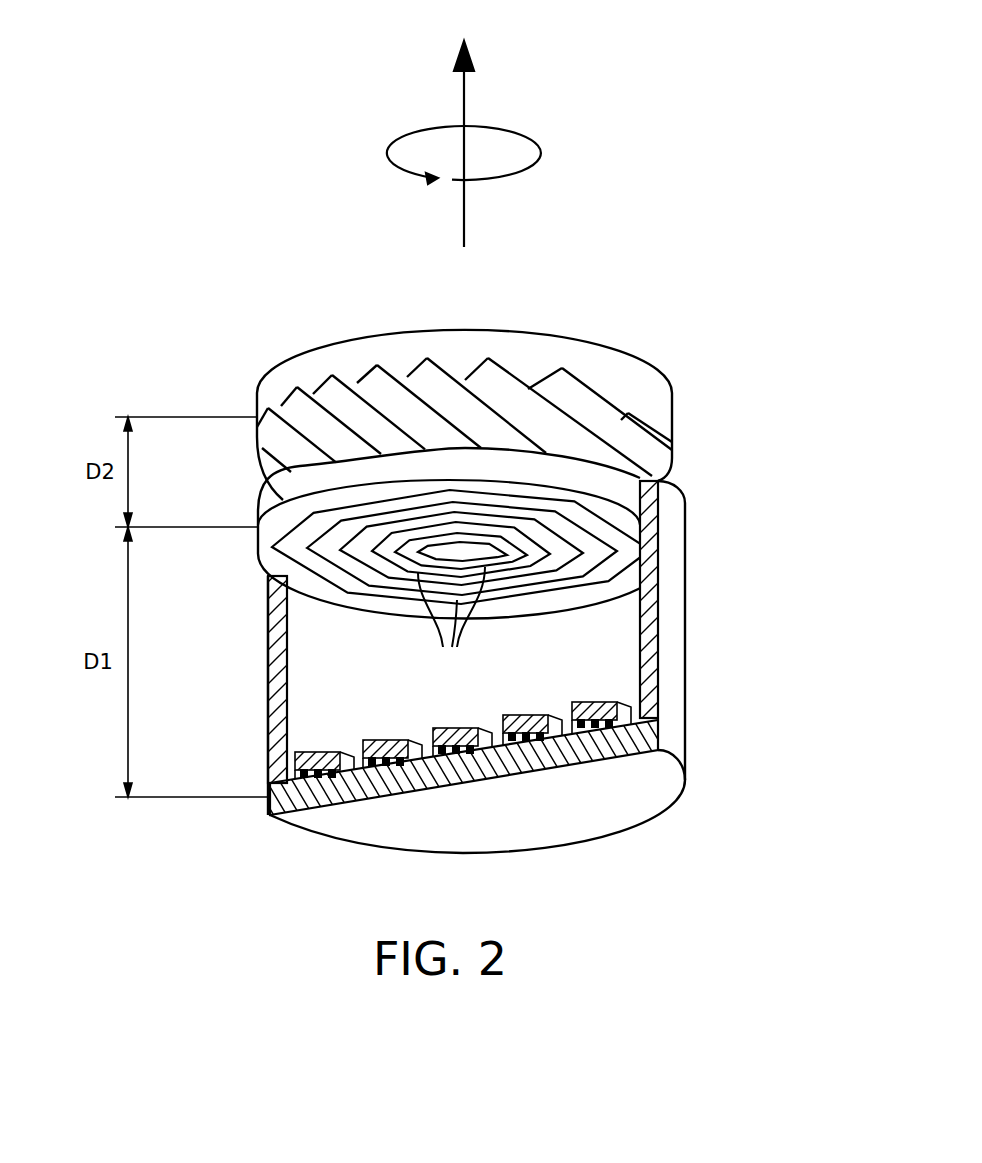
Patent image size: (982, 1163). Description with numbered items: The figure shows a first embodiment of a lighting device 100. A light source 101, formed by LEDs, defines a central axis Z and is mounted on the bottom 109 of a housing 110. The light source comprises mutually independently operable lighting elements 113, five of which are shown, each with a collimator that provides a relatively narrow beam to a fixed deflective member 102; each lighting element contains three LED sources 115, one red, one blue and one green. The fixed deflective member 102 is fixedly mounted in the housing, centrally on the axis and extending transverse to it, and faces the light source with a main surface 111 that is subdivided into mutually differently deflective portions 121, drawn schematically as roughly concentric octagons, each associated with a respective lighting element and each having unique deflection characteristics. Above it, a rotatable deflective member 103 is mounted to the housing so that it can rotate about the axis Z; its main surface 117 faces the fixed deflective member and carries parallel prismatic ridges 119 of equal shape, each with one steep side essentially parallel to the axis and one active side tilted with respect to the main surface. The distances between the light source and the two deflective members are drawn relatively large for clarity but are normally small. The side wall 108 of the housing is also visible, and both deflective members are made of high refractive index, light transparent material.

The lighting device 100 is at (716, 173).
The light source 101 is at (308, 708).
The fixed deflective member 102 is at (257, 514).
The rotatable deflective member 103 is at (308, 370).
The side wall 108 is at (620, 669).
The bottom 109 is at (353, 802).
The housing 110 is at (688, 560).
The main surface 111 is at (557, 473).
The lighting elements 113 is at (382, 740).
The LED sources 115 is at (540, 741).
The main surface 117 is at (298, 413).
The prismatic ridges 119 is at (366, 392).
The deflective portions 121 is at (451, 621).